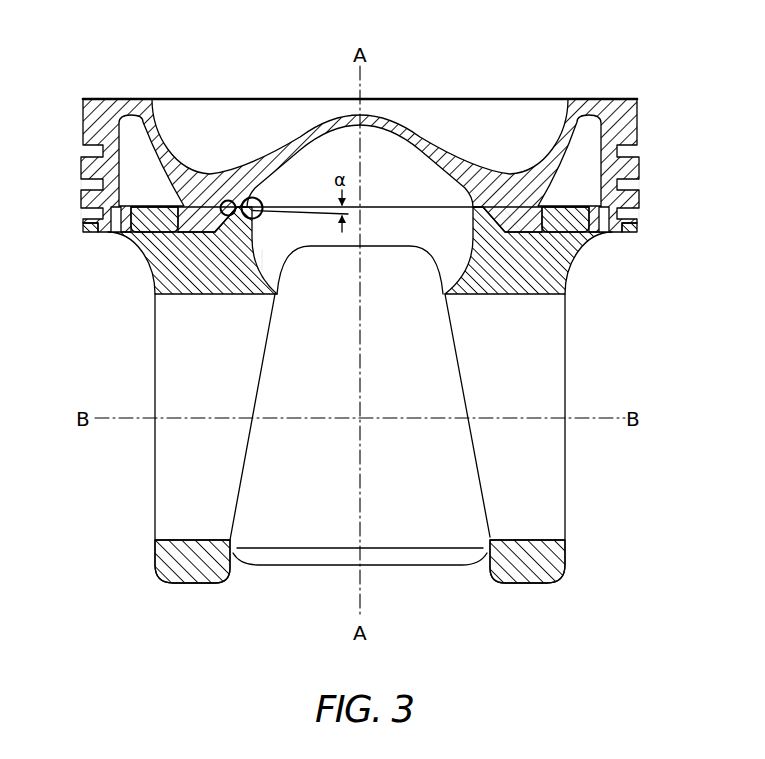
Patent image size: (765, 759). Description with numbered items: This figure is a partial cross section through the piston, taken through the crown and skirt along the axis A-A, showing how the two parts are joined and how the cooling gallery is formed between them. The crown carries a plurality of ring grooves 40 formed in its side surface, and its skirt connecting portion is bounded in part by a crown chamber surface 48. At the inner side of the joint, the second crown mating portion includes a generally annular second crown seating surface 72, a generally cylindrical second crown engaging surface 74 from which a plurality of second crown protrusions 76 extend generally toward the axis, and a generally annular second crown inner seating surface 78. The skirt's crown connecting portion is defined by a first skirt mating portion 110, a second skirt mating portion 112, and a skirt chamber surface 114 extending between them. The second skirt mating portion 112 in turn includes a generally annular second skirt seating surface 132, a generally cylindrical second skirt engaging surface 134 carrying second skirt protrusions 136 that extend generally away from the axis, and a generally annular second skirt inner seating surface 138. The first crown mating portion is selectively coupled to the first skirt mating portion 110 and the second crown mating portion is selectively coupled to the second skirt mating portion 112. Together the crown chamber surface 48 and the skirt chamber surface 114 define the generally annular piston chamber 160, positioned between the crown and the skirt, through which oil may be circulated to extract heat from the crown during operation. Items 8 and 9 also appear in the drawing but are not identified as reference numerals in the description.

The seal ring 8 is at (232, 200).
The seal ring 9 is at (255, 197).
The ring grooves 40 is at (90, 185).
The crown chamber surface 48 is at (129, 132).
The second crown seating surface 72 is at (196, 238).
The second crown engaging surface 74 is at (218, 203).
The second crown protrusions 76 is at (283, 284).
The second crown inner seating surface 78 is at (259, 211).
The first skirt mating portion 110 is at (598, 225).
The second skirt mating portion 112 is at (490, 215).
The skirt chamber surface 114 is at (160, 226).
The second skirt seating surface 132 is at (548, 206).
The second skirt engaging surface 134 is at (575, 271).
The second skirt protrusions 136 is at (513, 225).
The second skirt inner seating surface 138 is at (482, 198).
The piston chamber 160 is at (586, 151).